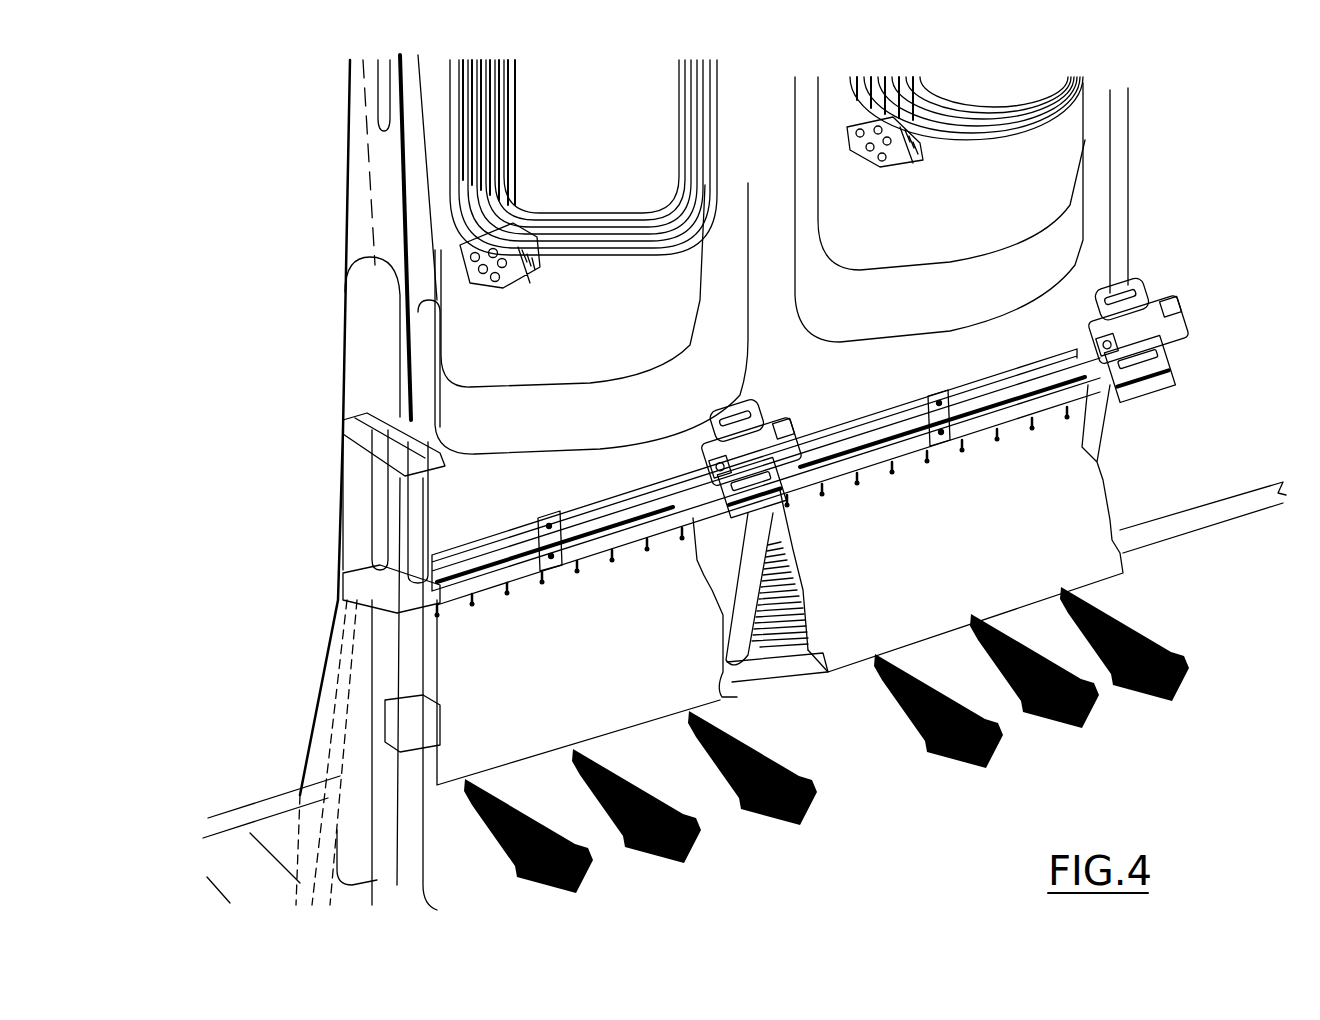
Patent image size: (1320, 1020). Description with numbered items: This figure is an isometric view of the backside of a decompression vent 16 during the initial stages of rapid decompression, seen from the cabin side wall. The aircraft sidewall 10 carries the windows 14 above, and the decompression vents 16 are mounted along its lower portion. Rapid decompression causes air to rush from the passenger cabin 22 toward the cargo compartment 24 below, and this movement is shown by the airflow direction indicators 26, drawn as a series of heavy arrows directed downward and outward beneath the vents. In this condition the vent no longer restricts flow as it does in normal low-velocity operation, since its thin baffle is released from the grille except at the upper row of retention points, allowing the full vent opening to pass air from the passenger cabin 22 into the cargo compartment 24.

The aircraft sidewall 10 is at (775, 317).
The windows 14 is at (625, 143).
The decompression vent 16 is at (742, 697).
The passenger cabin 22 is at (298, 360).
The cargo compartment 24 is at (930, 850).
The airflow direction indicators 26 is at (578, 895).